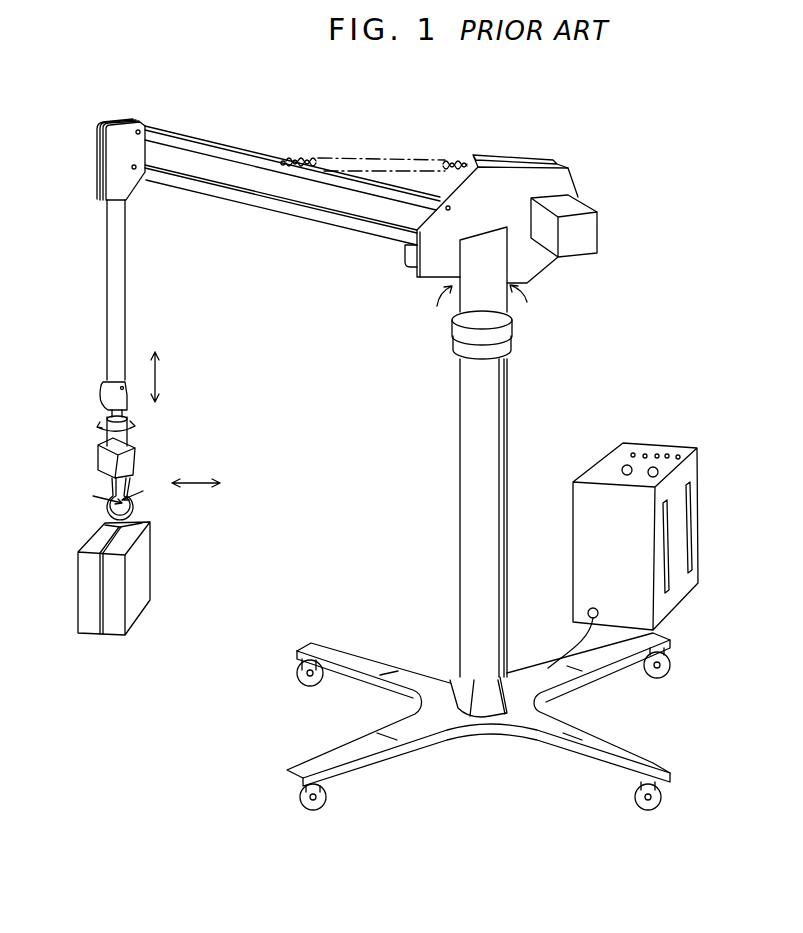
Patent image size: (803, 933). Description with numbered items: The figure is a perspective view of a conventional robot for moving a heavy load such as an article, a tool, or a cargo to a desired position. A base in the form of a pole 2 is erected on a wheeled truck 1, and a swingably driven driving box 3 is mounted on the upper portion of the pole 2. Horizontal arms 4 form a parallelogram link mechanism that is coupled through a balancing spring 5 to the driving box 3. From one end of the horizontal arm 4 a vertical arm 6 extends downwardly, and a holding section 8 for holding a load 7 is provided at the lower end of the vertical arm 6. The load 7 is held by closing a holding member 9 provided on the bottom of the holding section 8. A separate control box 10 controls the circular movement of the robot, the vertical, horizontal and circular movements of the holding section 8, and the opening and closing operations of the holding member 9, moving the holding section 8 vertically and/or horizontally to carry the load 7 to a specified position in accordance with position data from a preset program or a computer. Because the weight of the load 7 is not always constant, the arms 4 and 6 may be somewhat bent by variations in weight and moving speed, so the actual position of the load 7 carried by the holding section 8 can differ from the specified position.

The truck 1 is at (485, 746).
The pole 2 is at (510, 407).
The driving box 3 is at (512, 180).
The horizontal arms 4 is at (263, 200).
The balancing spring 5 is at (414, 157).
The vertical arm 6 is at (107, 300).
The load 7 is at (155, 572).
The holding section 8 is at (163, 443).
The holding member 9 is at (139, 507).
The control box 10 is at (657, 447).